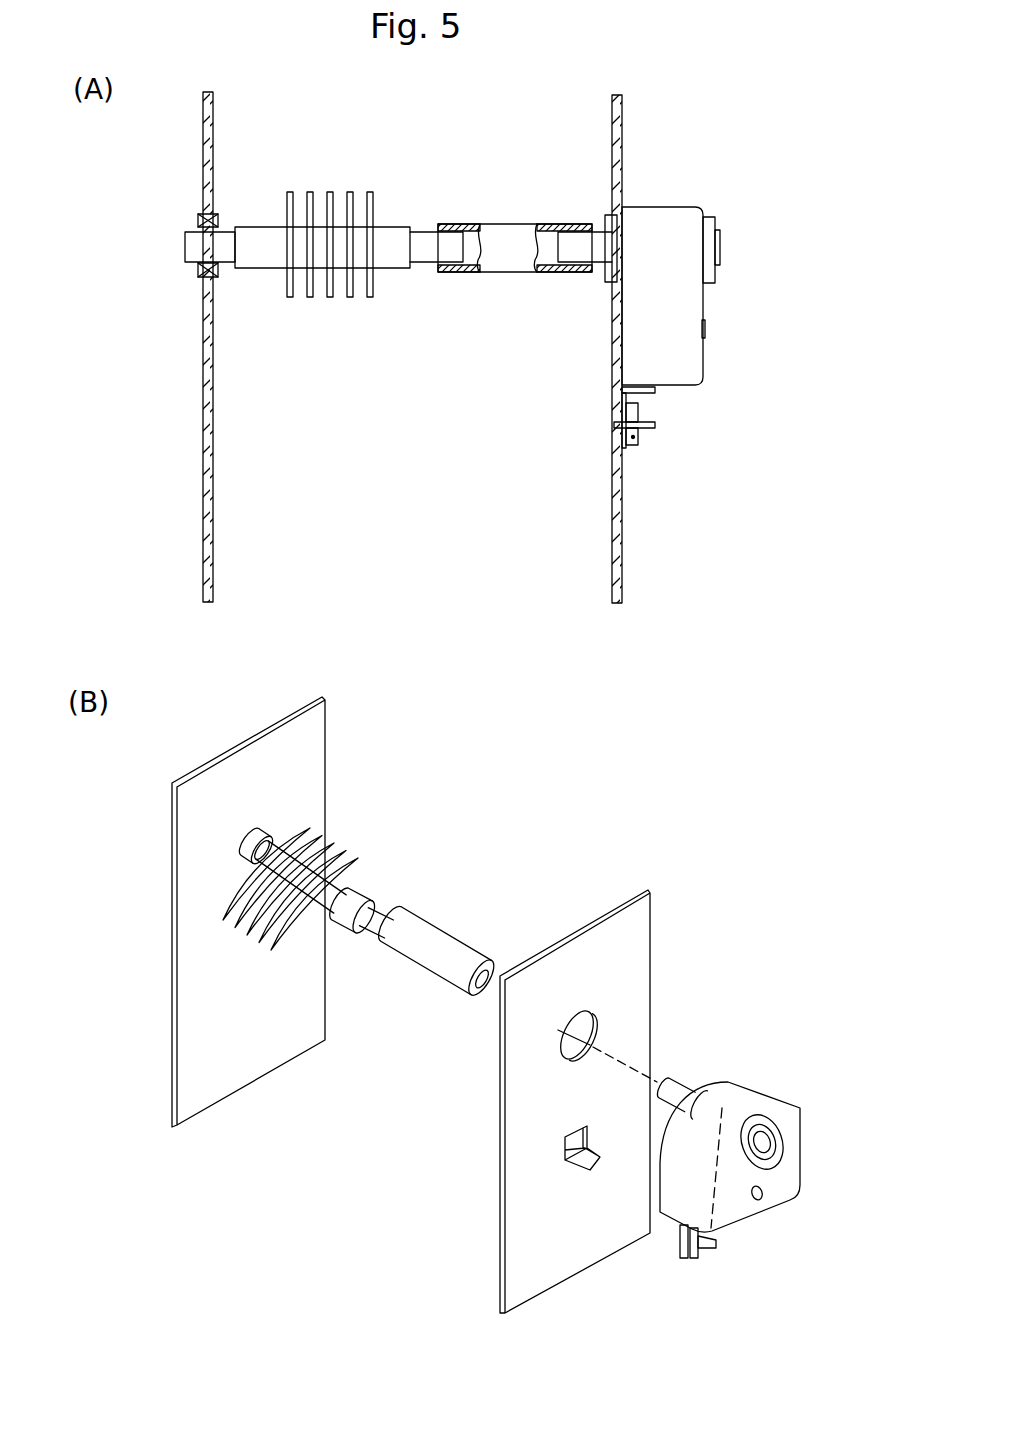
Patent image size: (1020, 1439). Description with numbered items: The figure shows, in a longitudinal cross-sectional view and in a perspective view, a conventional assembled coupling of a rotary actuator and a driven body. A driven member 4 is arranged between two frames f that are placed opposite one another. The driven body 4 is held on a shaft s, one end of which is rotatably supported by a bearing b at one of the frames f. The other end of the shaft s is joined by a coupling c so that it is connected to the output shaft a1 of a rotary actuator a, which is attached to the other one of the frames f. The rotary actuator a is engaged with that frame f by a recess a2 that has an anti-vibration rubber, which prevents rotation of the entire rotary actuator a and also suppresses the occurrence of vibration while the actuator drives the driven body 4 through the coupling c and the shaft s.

The frame f is at (207, 540).
The shaft s is at (192, 250).
The bearing b is at (215, 277).
The driven member 4 is at (330, 197).
The coupling c is at (500, 243).
The output shaft a1 is at (580, 255).
The rotary actuator a is at (672, 232).
The recess a2 is at (635, 440).